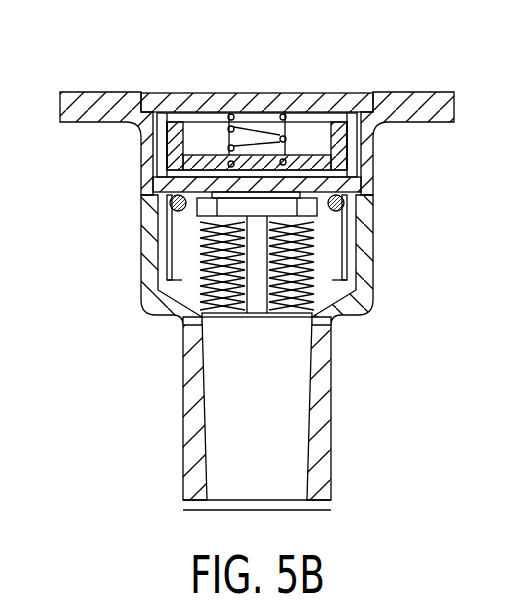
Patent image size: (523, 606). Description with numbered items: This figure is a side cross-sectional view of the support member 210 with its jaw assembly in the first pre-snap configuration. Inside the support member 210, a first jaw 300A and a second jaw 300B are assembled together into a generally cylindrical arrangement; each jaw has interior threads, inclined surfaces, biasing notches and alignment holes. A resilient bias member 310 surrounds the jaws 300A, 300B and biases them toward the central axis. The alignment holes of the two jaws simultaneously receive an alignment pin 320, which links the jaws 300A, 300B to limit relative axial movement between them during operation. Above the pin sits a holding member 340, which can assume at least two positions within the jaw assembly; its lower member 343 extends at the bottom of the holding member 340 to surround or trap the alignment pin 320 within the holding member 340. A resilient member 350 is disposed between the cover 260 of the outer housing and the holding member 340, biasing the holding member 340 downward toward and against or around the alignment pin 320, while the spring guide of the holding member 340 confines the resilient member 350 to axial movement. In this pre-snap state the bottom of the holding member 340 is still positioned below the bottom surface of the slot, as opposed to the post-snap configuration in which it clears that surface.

The support member 210 is at (420, 98).
The cover 260 is at (268, 92).
The resilient member 350 is at (257, 135).
The holding member 340 is at (302, 146).
The alignment pin 320 is at (359, 184).
The resilient bias member 310 is at (368, 242).
The lower member 343 is at (318, 268).
The first jaw 300A is at (152, 306).
The second jaw 300B is at (320, 303).